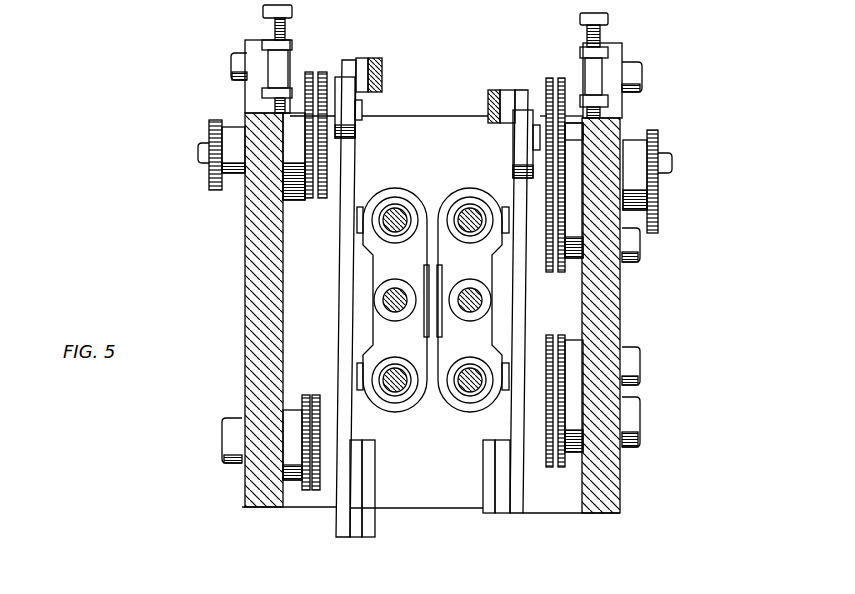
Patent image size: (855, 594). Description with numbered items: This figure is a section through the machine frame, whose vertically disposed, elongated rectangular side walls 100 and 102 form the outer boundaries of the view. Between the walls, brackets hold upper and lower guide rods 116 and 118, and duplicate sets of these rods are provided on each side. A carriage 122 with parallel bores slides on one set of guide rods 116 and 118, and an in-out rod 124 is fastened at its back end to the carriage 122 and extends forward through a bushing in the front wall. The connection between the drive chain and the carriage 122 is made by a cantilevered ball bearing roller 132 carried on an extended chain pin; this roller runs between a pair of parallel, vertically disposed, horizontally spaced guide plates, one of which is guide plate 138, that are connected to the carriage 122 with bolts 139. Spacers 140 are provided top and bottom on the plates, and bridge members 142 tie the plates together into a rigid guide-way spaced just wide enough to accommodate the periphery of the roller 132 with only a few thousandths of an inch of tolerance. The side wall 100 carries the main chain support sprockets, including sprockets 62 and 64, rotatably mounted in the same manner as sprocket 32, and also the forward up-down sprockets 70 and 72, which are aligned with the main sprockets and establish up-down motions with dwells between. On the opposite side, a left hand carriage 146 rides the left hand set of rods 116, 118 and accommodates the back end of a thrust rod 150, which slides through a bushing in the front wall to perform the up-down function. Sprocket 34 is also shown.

The sprocket 32 is at (320, 200).
The lower sprocket 34 is at (309, 394).
The main chain support sprocket 62 is at (567, 153).
The main chain support sprocket 64 is at (555, 468).
The up-down sprocket 70 is at (570, 268).
The up-down sprocket 72 is at (548, 337).
The side wall 100 is at (622, 318).
The side wall 102 is at (248, 250).
The upper guide rod 116 is at (468, 215).
The lower guide rod 118 is at (472, 387).
The carriage 122 is at (375, 262).
The in-out rod 124 is at (388, 298).
The roller 132 is at (353, 134).
The guide plate 138 is at (348, 61).
The bolt 139 is at (362, 217).
The spacer 140 is at (358, 58).
The bridge member 142 is at (488, 90).
The left hand carriage 146 is at (492, 283).
The thrust rod 150 is at (472, 307).